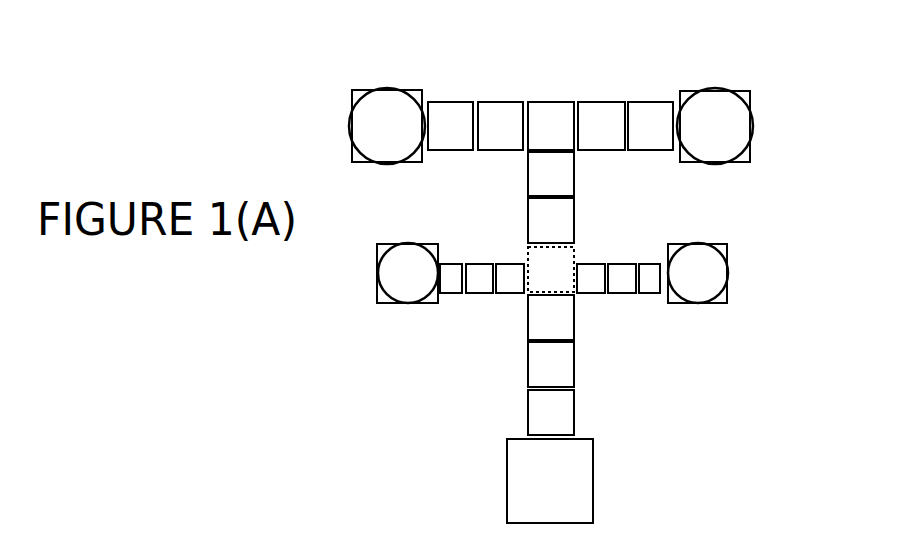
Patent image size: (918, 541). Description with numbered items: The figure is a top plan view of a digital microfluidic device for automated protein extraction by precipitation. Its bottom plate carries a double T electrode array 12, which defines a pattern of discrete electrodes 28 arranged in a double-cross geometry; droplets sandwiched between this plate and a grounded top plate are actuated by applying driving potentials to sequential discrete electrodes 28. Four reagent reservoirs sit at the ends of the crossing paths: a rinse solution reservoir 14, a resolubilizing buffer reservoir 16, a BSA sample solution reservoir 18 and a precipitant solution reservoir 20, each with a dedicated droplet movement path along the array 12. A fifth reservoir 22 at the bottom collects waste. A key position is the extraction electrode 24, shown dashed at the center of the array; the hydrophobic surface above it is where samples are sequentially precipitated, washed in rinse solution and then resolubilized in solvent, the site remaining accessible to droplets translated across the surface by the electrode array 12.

The electrode array 12 is at (552, 102).
The rinse solution reservoir 14 is at (422, 93).
The resolubilizing buffer reservoir 16 is at (748, 91).
The BSA solution reservoir 18 is at (728, 260).
The precipitant solution reservoir 20 is at (384, 298).
The waste reservoir 22 is at (507, 473).
The extraction electrode 24 is at (522, 295).
The discrete electrodes 28 is at (502, 122).